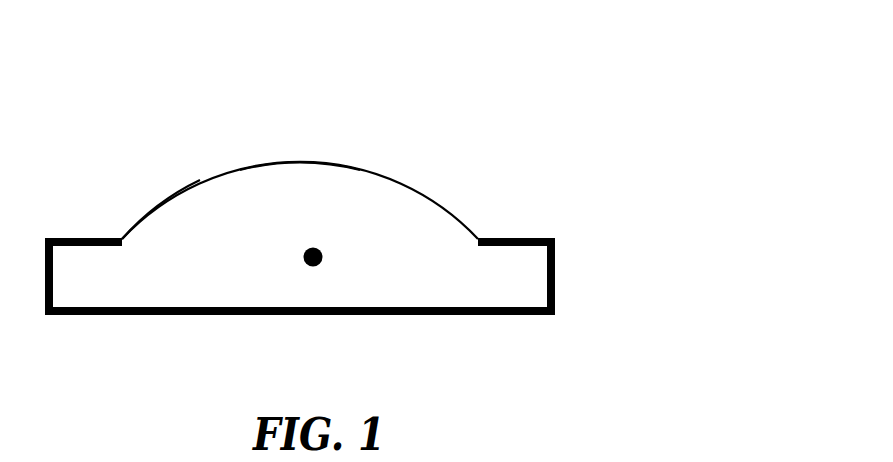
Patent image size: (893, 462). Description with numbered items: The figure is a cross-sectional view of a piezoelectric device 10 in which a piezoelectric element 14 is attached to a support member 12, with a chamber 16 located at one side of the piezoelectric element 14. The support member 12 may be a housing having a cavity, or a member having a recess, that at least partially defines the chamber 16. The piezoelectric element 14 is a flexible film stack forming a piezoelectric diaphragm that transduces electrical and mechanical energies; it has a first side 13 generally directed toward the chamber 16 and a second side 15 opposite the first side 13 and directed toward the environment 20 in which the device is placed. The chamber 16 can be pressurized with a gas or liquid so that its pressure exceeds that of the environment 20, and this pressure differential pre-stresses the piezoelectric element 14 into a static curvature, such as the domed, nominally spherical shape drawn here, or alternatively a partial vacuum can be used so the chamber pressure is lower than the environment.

The piezoelectric device 10 is at (645, 236).
The support member 12 is at (532, 315).
The first side 13 is at (300, 162).
The piezoelectric element 14 is at (447, 211).
The second side 15 is at (153, 211).
The chamber 16 is at (313, 267).
The environment 20 is at (500, 34).